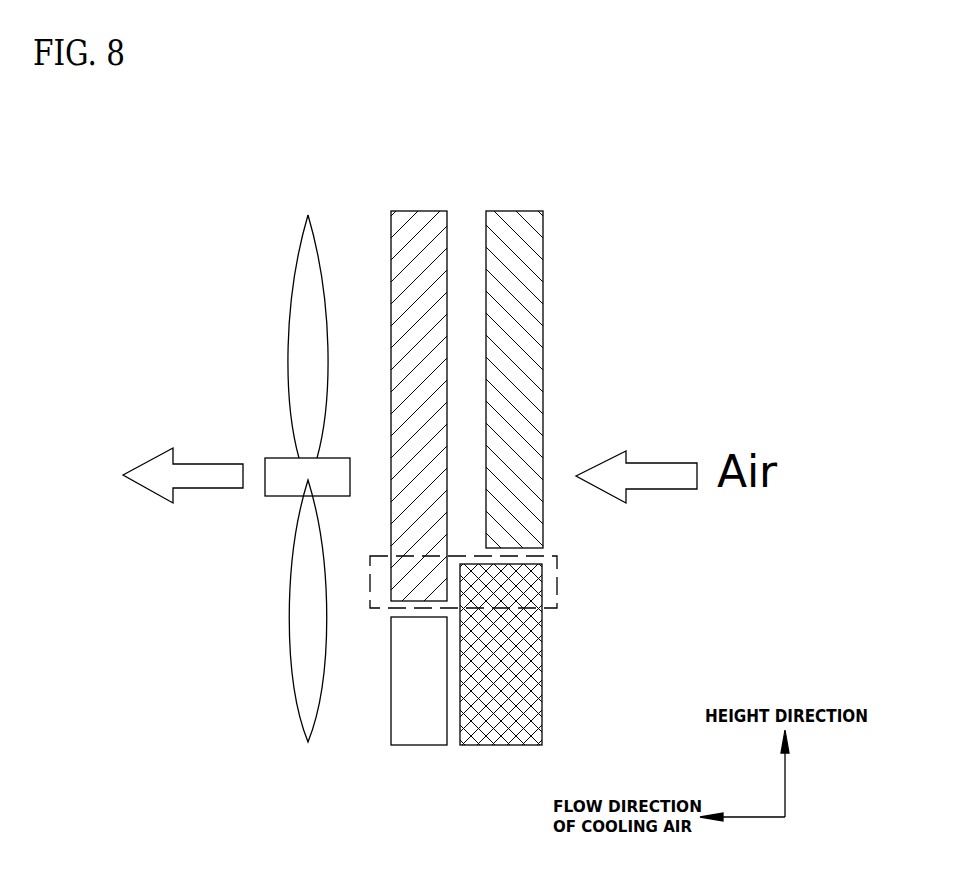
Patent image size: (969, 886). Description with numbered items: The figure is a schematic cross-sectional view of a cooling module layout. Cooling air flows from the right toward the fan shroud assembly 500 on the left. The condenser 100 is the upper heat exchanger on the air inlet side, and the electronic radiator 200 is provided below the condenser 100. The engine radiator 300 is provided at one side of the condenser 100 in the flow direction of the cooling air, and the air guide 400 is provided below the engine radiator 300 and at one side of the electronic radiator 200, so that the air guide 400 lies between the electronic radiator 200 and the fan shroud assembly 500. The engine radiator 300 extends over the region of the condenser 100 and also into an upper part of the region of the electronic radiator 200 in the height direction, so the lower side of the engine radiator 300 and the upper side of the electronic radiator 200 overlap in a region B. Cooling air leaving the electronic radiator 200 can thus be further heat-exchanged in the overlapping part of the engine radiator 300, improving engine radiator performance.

The condenser 100 is at (523, 211).
The electronic radiator 200 is at (522, 745).
The engine radiator 300 is at (428, 211).
The air guide 400 is at (427, 745).
The fan shroud assembly 500 is at (308, 215).
The region B is at (557, 567).